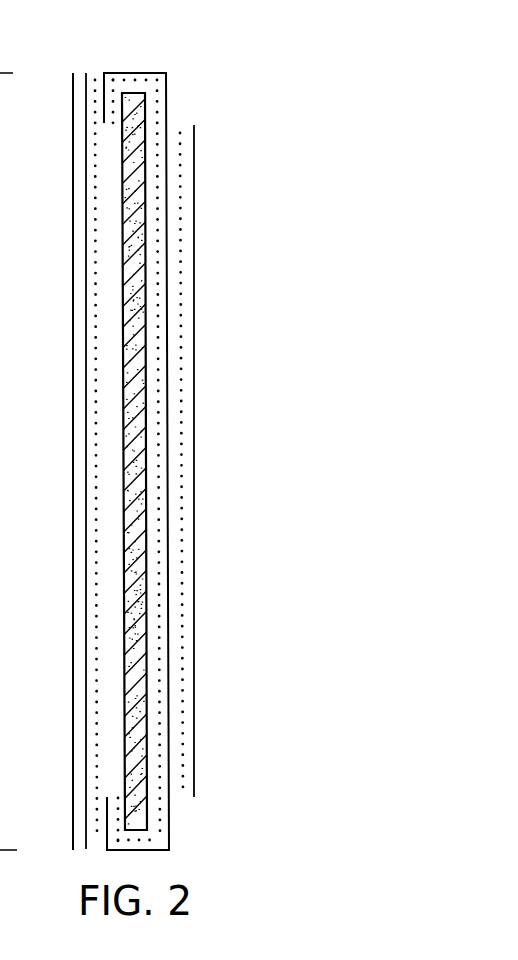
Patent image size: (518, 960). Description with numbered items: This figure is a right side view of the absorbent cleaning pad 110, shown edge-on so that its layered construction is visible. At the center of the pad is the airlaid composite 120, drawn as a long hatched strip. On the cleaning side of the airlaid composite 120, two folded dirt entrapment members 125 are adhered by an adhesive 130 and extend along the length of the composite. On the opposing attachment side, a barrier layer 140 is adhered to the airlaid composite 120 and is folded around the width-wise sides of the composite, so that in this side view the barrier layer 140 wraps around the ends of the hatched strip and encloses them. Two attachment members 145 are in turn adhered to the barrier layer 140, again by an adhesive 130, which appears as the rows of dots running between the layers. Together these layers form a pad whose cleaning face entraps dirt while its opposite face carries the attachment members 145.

The absorbent cleaning pad 110 is at (70, 213).
The airlaid composite 120 is at (135, 813).
The folded dirt entrapment members 125 is at (73, 536).
The adhesive 130 is at (97, 79).
The barrier layer 140 is at (145, 72).
The attachment members 145 is at (197, 705).